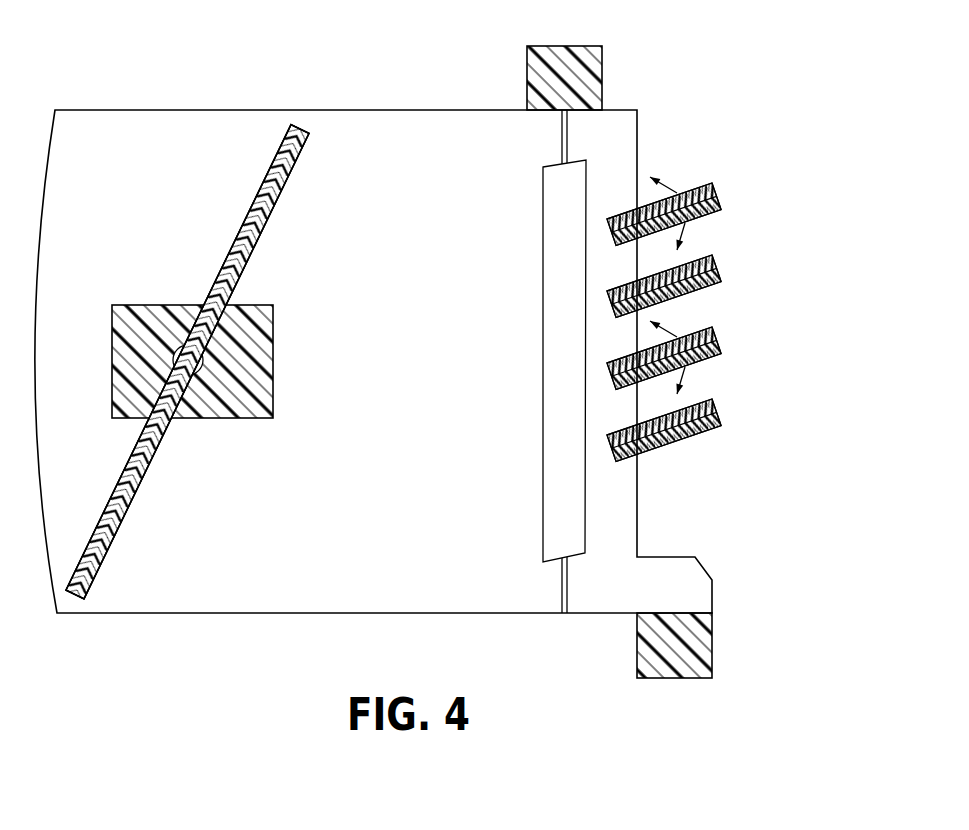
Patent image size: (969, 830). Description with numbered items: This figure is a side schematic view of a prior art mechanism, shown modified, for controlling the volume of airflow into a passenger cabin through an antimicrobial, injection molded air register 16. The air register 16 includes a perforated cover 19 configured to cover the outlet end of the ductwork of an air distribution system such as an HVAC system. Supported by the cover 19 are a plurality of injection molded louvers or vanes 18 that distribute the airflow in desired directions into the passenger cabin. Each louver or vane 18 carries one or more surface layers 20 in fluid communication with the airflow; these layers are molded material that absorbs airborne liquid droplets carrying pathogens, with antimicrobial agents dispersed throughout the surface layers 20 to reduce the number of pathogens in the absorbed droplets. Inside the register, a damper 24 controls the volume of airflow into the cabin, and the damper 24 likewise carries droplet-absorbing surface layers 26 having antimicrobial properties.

The air register 16 is at (715, 58).
The louvers or vanes 18 is at (588, 192).
The perforated cover 19 is at (619, 110).
The surface layers 20 is at (543, 344).
The damper 24 is at (122, 506).
The droplet-absorbing surface layers 26 is at (238, 243).